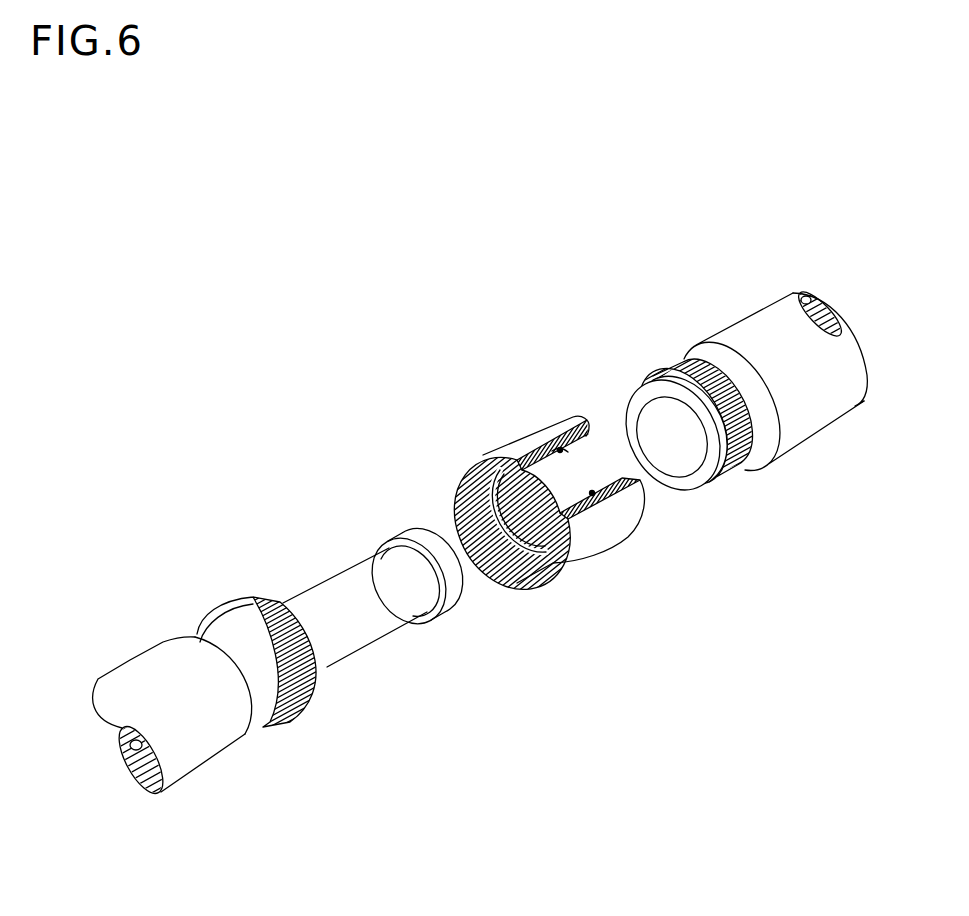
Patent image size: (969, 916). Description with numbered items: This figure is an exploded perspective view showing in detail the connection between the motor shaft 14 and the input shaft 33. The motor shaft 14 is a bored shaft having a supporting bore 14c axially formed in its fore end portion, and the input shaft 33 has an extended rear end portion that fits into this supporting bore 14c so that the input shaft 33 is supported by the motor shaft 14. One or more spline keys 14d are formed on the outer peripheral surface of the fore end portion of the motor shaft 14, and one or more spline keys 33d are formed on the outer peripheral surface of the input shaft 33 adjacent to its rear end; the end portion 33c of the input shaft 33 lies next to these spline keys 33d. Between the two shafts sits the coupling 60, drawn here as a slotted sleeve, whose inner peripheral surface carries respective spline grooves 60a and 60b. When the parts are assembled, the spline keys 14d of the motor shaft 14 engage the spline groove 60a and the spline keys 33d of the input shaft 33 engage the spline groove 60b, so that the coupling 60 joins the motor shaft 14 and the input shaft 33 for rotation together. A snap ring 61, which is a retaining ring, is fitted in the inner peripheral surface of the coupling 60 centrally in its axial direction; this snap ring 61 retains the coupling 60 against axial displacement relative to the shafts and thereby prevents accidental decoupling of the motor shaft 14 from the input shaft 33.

The motor shaft 14 is at (811, 436).
The supporting bore 14c is at (690, 466).
The spline keys 14d is at (732, 472).
The input shaft 33 is at (143, 649).
The end portion 33c is at (410, 530).
The spline keys 33d is at (252, 597).
The coupling 60 is at (525, 429).
The spline groove 60a is at (532, 578).
The spline groove 60b is at (491, 565).
The snap ring 61 is at (562, 452).